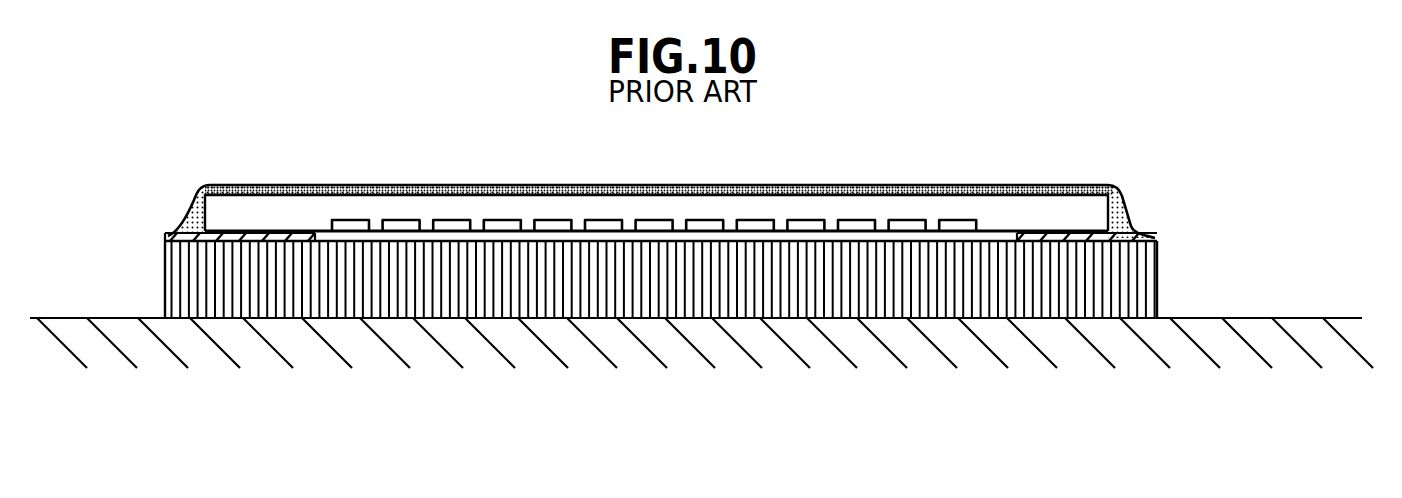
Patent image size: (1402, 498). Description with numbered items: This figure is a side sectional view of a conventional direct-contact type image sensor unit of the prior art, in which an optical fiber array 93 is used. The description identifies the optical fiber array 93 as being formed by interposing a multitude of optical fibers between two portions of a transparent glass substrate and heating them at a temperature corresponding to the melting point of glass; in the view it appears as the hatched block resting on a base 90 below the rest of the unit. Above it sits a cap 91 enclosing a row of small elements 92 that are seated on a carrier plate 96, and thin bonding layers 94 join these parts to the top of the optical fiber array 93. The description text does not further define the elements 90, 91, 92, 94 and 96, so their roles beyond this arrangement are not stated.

The base / heat sink 90 is at (447, 340).
The cap (cover) 91 is at (1022, 207).
The semiconductor chips 92 is at (953, 223).
The optical fiber array 93 is at (993, 285).
The bonding layer 94 is at (1155, 242).
The chip carrier plate 96 is at (1077, 227).